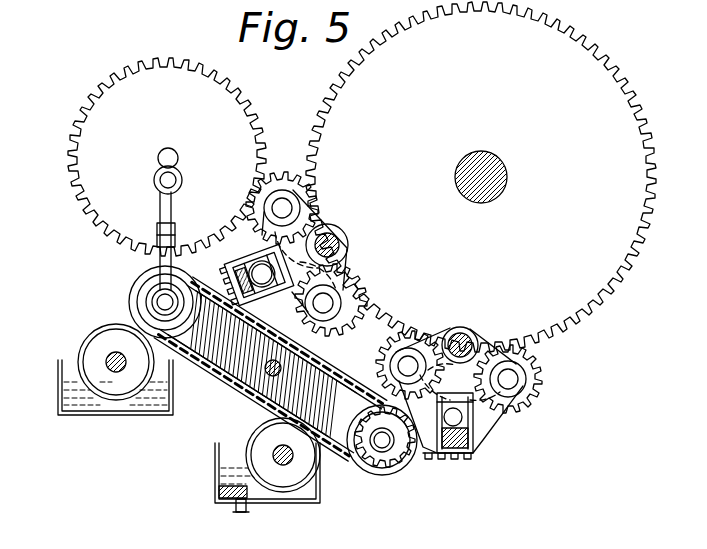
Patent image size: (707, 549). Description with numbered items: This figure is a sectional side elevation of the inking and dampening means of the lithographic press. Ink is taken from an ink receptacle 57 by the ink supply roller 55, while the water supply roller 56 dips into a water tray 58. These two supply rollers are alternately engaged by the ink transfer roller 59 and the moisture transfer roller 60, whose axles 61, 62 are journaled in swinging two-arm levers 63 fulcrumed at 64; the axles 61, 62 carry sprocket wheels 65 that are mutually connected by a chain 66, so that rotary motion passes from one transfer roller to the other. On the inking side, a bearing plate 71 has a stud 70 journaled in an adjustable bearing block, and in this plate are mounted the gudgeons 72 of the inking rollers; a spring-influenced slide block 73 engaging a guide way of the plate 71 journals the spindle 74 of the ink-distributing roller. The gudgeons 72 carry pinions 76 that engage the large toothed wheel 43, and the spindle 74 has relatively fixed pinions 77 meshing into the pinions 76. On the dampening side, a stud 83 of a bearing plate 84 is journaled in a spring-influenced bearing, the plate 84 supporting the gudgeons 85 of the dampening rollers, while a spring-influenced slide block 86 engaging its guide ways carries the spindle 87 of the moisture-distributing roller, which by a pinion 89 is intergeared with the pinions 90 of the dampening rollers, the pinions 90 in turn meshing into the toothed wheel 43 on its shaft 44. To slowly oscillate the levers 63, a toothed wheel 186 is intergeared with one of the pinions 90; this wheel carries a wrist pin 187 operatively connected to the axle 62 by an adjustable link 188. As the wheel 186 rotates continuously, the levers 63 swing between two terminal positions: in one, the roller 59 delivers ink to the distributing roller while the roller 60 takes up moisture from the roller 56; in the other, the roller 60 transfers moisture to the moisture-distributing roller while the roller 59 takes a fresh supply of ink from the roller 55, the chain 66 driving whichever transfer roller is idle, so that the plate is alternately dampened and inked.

The toothed wheel 43 is at (618, 281).
The gear shaft 44 is at (489, 199).
The toothed wheel 186 is at (108, 82).
The wrist pin 187 is at (178, 177).
The adjustable link 188 is at (163, 207).
The pinions 90 is at (288, 176).
The gudgeons 85 is at (285, 206).
The stud 83 is at (331, 242).
The bearing plate 84 is at (345, 263).
The spring-influenced slide block 86 is at (262, 255).
The spindle 87 is at (262, 271).
The pinion 89 is at (232, 252).
The chain 66 is at (343, 388).
The pinions 76 is at (396, 334).
The gudgeons 72 is at (409, 360).
The stud 70 is at (463, 343).
The bearing plate 71 is at (511, 365).
The spring-influenced slide block 73 is at (462, 420).
The pinions 77 is at (469, 437).
The spindle 74 is at (472, 455).
The moisture transfer roller 60 is at (132, 289).
The axle 62 is at (152, 302).
The water supply roller 56 is at (92, 333).
The water tray 58 is at (62, 388).
The sprocket wheels 65 is at (188, 352).
The swinging two-arm levers 63 is at (228, 373).
The fulcrum 64 is at (258, 393).
The ink receptacle 57 is at (218, 459).
The ink supply roller 55 is at (320, 473).
The ink transfer roller 59 is at (404, 467).
The axle 61 is at (385, 448).